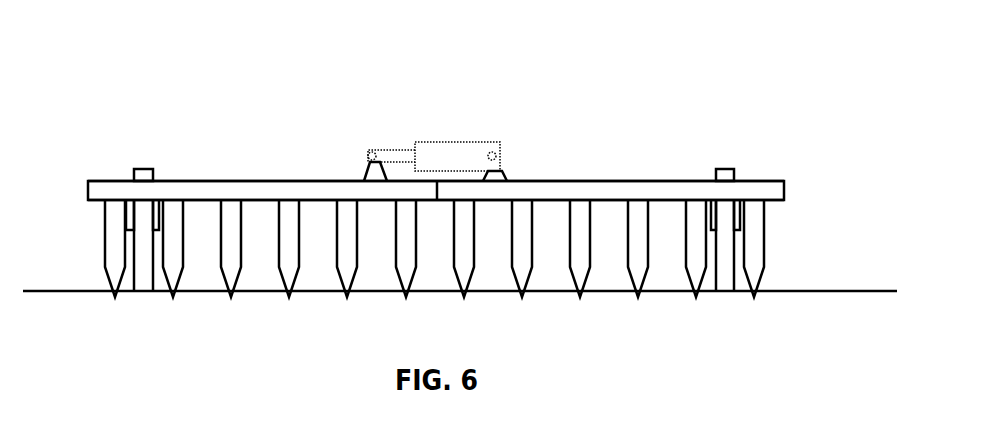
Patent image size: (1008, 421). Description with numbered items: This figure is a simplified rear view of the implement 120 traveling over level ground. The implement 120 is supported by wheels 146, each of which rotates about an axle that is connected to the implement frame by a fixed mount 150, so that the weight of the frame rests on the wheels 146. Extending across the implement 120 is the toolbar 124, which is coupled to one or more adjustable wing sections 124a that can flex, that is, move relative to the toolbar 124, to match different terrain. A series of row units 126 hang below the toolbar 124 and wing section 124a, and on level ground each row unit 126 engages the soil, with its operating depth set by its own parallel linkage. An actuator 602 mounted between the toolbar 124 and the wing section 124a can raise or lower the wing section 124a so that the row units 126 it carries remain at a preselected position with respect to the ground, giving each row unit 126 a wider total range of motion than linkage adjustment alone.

The implement 120 is at (338, 74).
The wing section 124a is at (232, 188).
The toolbar 124 is at (653, 188).
The row units 126 is at (755, 245).
The wheel 146 is at (138, 172).
The fixed mount 150 is at (742, 212).
The actuator 602 is at (457, 155).